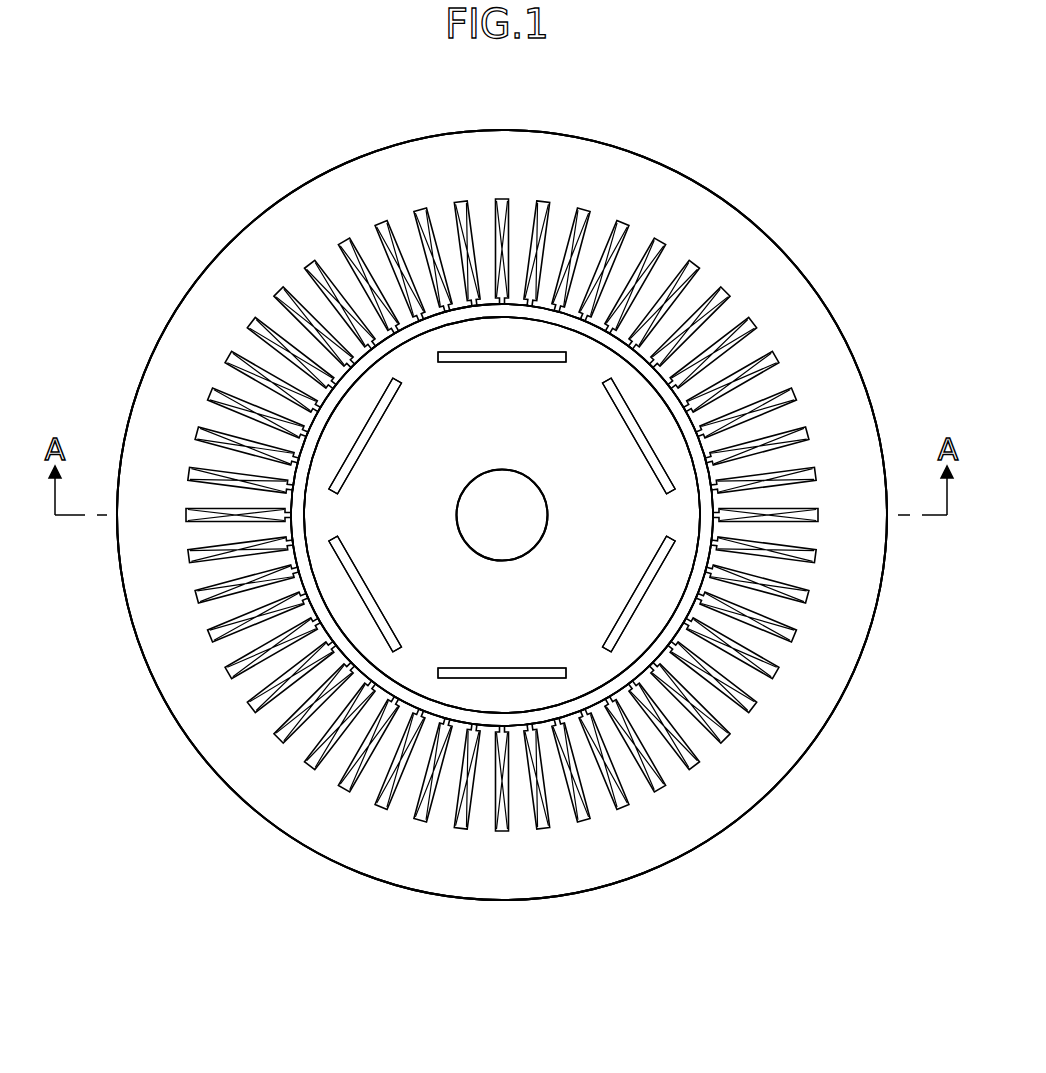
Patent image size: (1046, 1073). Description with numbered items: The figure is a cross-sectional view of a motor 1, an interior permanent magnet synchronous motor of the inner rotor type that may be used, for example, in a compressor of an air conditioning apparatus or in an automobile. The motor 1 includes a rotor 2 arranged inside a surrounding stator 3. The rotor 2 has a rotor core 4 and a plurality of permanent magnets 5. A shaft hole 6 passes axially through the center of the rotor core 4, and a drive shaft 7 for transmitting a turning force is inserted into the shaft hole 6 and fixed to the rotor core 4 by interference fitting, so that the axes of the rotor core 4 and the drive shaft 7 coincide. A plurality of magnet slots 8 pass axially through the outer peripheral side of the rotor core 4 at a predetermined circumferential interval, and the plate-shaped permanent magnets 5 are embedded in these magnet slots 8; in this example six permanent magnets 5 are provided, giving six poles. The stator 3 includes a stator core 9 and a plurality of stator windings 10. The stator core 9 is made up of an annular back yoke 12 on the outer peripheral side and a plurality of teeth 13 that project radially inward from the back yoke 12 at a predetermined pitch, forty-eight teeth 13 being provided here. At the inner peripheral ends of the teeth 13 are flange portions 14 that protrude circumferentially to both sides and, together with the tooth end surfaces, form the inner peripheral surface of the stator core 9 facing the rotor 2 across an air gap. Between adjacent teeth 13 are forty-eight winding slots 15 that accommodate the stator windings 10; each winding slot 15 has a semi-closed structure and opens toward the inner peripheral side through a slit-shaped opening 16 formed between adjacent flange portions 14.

The motor 1 is at (172, 208).
The rotor 2 is at (697, 553).
The stator 3 is at (812, 287).
The rotor core 4 is at (330, 435).
The permanent magnet 5 is at (375, 443).
The shaft hole 6 is at (548, 522).
The drive shaft 7 is at (502, 515).
The magnet slot 8 is at (402, 406).
The stator core 9 is at (170, 578).
The stator winding 10 is at (420, 208).
The back yoke 12 is at (153, 406).
The tooth 13 is at (652, 290).
The flange portion 14 is at (410, 340).
The winding slot 15 is at (462, 213).
The opening 16 is at (500, 305).